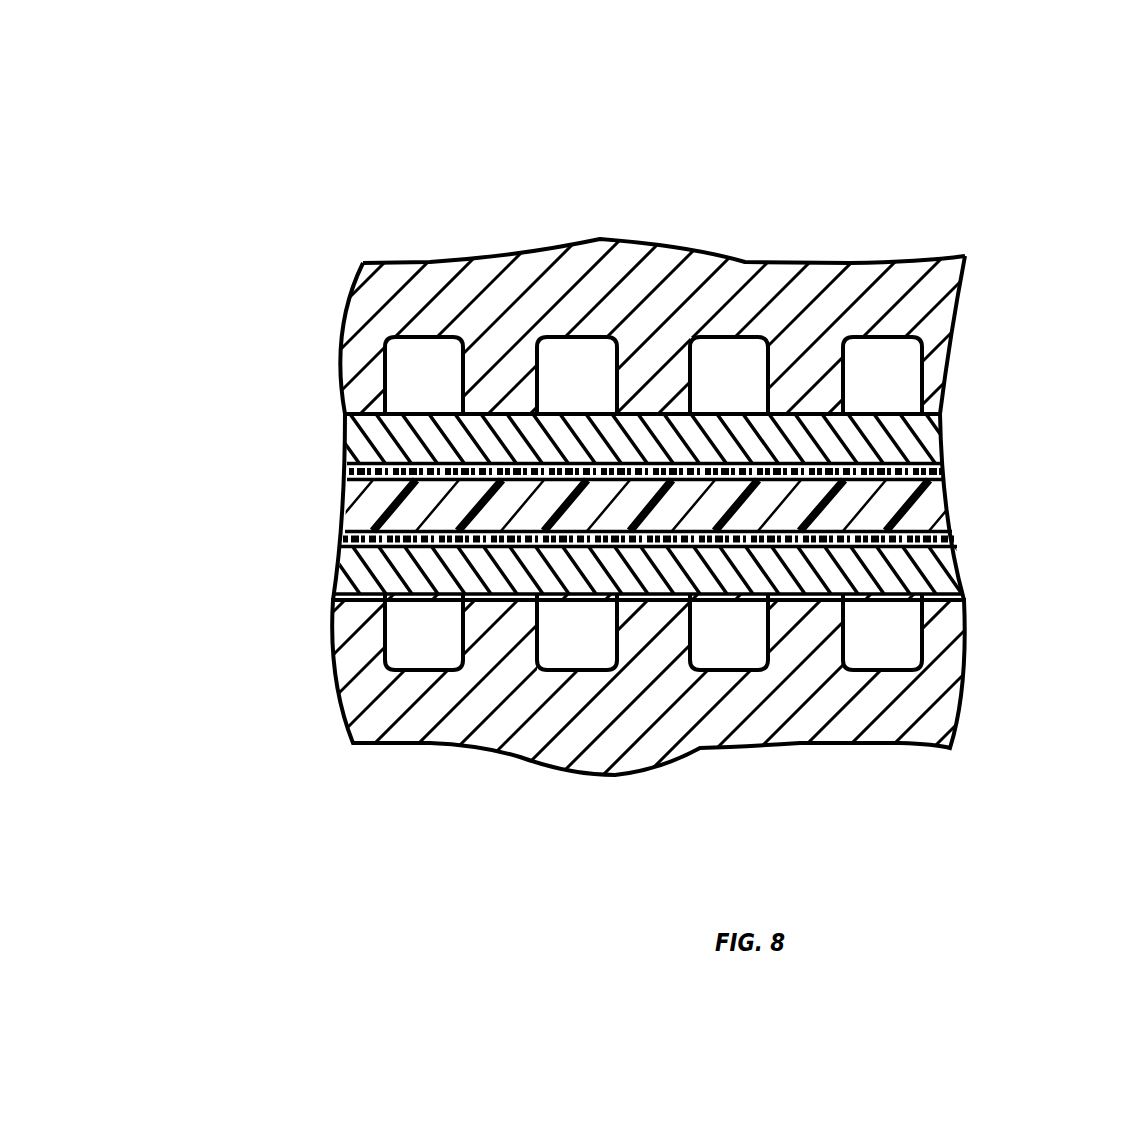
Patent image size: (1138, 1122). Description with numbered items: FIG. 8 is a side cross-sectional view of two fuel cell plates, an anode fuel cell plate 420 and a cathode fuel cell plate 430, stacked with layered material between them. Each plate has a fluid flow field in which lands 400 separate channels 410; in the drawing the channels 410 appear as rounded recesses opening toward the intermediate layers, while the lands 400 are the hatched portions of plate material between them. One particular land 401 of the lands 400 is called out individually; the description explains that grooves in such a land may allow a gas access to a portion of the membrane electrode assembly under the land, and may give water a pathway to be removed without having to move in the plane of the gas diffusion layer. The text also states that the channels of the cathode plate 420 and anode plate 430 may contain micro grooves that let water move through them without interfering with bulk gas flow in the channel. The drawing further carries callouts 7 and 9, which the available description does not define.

The body 7 is at (641, 423).
The outer surface 9 is at (603, 250).
The lands 400 is at (672, 321).
The land 401 is at (672, 505).
The channels 410 is at (420, 375).
The anode fuel cell plate 420 is at (646, 236).
The cathode fuel cell plate 430 is at (933, 725).